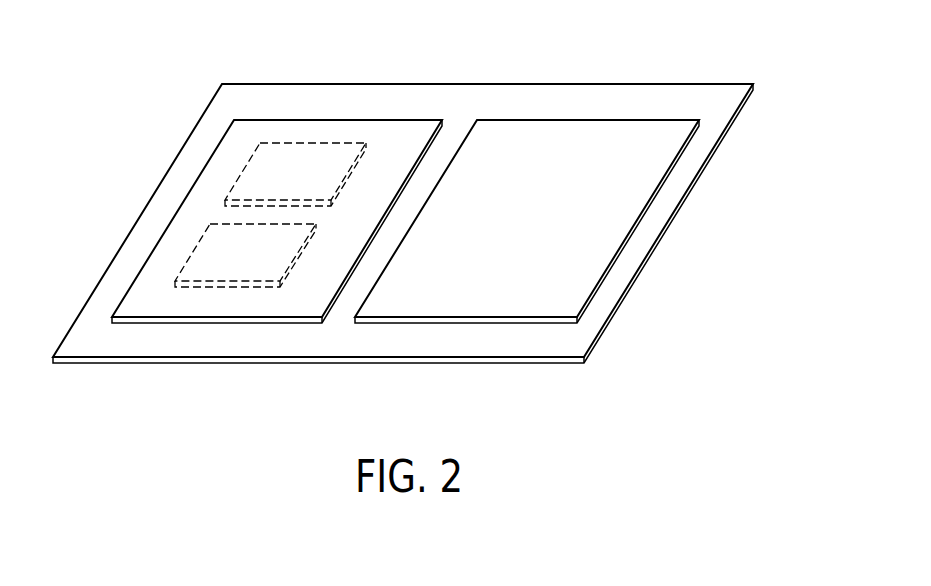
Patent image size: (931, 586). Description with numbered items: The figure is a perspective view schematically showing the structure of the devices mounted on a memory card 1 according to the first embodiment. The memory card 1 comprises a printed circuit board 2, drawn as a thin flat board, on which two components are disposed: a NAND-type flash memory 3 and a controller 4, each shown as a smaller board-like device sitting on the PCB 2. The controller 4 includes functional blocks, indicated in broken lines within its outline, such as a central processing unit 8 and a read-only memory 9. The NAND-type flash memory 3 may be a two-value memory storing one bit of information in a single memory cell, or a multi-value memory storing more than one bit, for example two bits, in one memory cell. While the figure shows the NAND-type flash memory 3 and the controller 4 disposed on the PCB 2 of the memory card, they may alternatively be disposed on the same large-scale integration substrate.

The memory card 1 is at (692, 286).
The printed circuit board 2 is at (677, 100).
The NAND-type flash memory 3 is at (513, 305).
The controller 4 is at (248, 305).
The central processing unit 8 is at (197, 246).
The read-only memory 9 is at (243, 163).